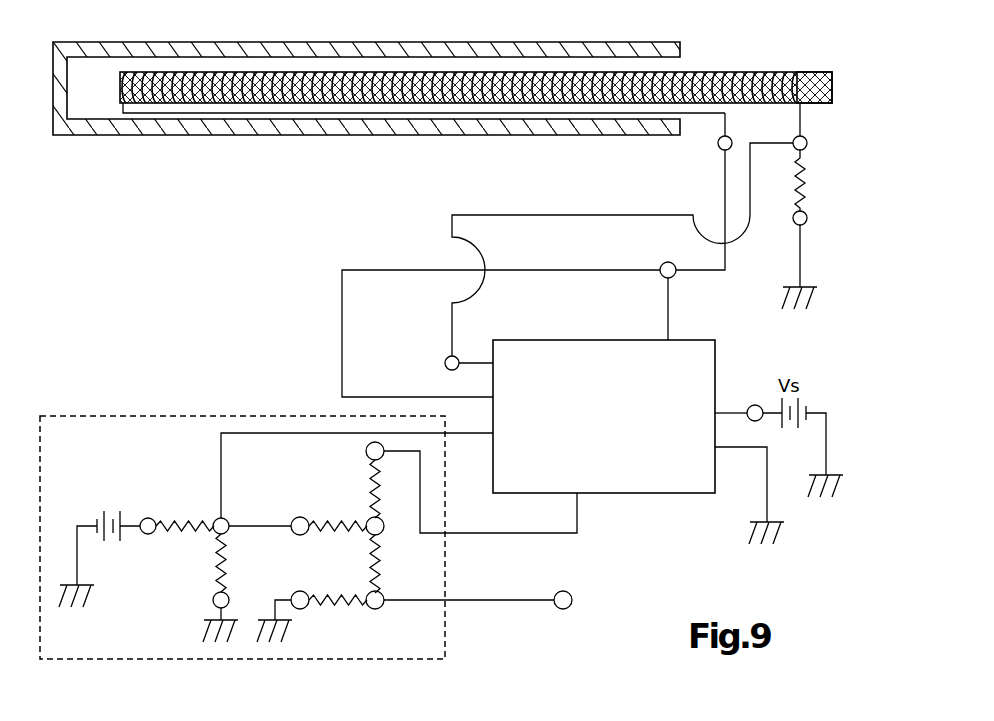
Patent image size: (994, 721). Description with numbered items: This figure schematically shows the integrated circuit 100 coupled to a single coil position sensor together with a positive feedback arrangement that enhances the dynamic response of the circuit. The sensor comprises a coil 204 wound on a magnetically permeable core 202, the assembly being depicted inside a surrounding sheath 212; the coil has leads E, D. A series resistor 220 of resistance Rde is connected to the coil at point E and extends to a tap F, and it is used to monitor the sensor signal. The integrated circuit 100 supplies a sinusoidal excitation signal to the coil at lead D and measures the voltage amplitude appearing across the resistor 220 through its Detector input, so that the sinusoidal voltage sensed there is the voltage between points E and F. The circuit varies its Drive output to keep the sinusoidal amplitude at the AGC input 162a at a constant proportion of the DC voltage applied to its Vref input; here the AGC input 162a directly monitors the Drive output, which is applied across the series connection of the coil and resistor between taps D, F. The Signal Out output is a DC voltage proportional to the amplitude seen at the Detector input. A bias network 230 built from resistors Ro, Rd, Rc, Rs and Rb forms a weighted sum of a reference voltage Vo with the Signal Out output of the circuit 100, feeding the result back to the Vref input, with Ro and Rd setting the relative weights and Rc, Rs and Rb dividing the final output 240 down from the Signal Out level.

The sheath / housing 212 is at (173, 55).
The coil 204 is at (355, 90).
The magnetically permeable core 202 is at (822, 72).
The series resistor 220 is at (805, 178).
The AGC input 162a is at (668, 324).
The integrated circuit 100 is at (712, 484).
The bias network 230 is at (313, 660).
The final output 240 is at (568, 606).
The lead D is at (718, 146).
The lead E is at (807, 141).
The tap F is at (807, 216).